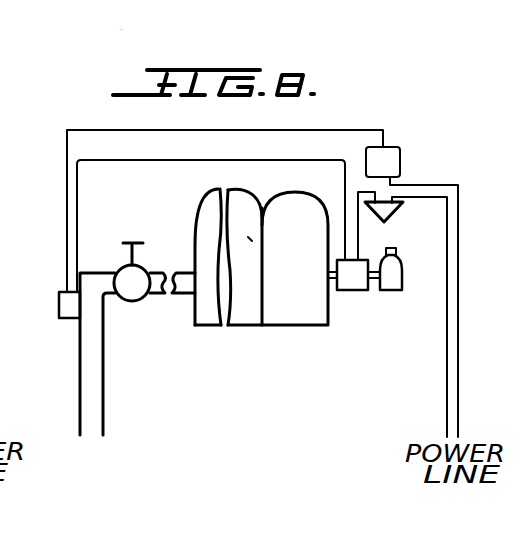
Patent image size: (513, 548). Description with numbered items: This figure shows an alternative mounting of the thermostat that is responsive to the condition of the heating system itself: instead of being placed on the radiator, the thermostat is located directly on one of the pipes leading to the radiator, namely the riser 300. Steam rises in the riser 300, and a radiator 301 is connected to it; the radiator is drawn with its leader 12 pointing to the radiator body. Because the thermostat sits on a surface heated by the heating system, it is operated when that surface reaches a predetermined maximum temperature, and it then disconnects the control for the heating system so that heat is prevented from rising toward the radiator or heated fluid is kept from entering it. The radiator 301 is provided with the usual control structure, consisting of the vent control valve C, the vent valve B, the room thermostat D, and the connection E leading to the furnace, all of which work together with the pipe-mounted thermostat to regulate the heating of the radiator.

The tank 12 is at (320, 281).
The riser 300 is at (105, 412).
The radiator 301 is at (321, 278).
The vent valve B is at (387, 290).
The vent control valve C is at (351, 290).
The room thermostat D is at (383, 162).
The connection to the furnace E is at (394, 212).